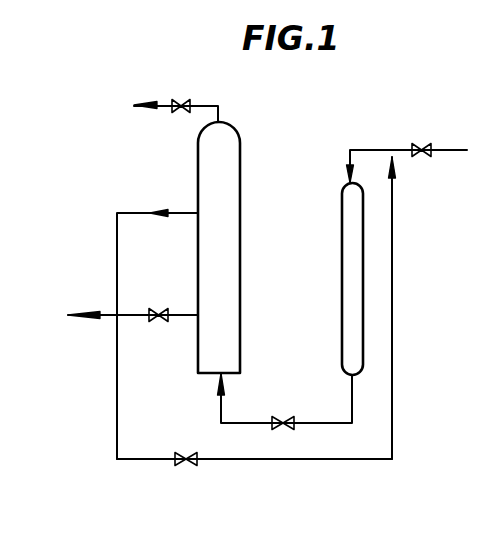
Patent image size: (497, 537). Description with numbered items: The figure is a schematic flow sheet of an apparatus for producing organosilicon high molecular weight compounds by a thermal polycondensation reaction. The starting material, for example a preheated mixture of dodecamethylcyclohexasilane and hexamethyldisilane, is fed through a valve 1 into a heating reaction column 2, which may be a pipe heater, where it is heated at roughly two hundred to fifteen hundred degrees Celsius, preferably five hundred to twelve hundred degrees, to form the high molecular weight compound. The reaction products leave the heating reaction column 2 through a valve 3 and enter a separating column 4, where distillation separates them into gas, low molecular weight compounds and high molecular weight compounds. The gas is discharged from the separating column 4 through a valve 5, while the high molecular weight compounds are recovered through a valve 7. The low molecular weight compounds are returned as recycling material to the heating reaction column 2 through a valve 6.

The valve 1 is at (418, 143).
The heating reaction column 2 is at (342, 297).
The valve 3 is at (281, 414).
The separating column 4 is at (240, 221).
The valve 5 is at (183, 99).
The valve 6 is at (186, 467).
The valve 7 is at (158, 323).